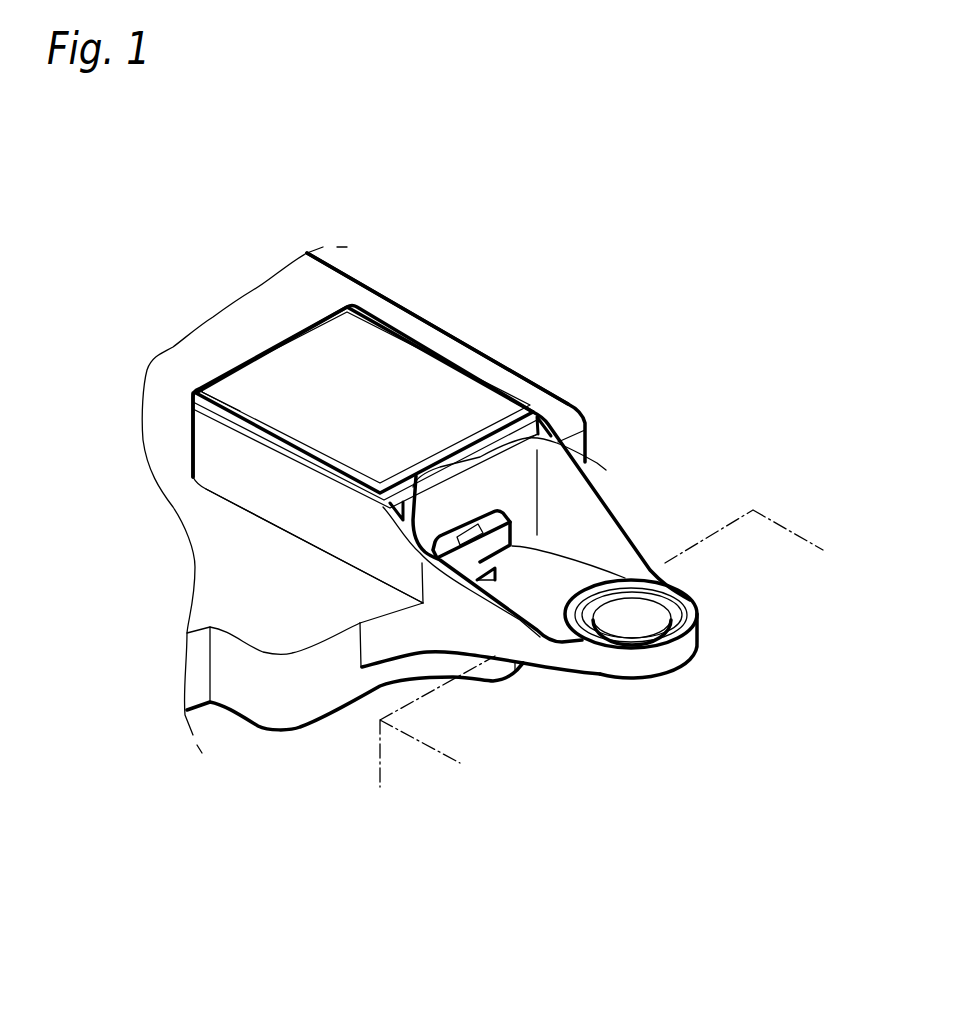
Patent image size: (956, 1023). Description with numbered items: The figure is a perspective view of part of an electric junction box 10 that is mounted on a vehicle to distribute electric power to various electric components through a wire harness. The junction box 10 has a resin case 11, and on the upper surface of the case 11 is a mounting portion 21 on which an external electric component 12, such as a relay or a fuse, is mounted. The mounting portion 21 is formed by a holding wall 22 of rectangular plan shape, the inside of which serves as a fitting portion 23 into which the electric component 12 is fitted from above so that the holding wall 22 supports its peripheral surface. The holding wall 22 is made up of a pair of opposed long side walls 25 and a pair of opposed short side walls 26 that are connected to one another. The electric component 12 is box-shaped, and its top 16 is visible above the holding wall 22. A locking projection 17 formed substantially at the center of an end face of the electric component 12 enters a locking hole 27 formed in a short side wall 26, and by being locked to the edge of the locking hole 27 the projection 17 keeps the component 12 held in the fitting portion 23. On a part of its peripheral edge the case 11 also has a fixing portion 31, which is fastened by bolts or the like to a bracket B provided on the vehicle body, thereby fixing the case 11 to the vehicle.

The electric junction box 10 is at (358, 222).
The resin case 11 is at (265, 731).
The external electric component 12 is at (353, 342).
The top 16 is at (427, 360).
The locking projection 17 is at (477, 525).
The mounting portion 21 is at (185, 425).
The holding wall 22 is at (191, 475).
The fitting portion 23 is at (233, 403).
The long side walls 25 is at (243, 483).
The short side walls 26 is at (482, 440).
The locking hole 27 is at (502, 514).
The fixing portion 31 is at (701, 602).
The bracket B is at (728, 520).